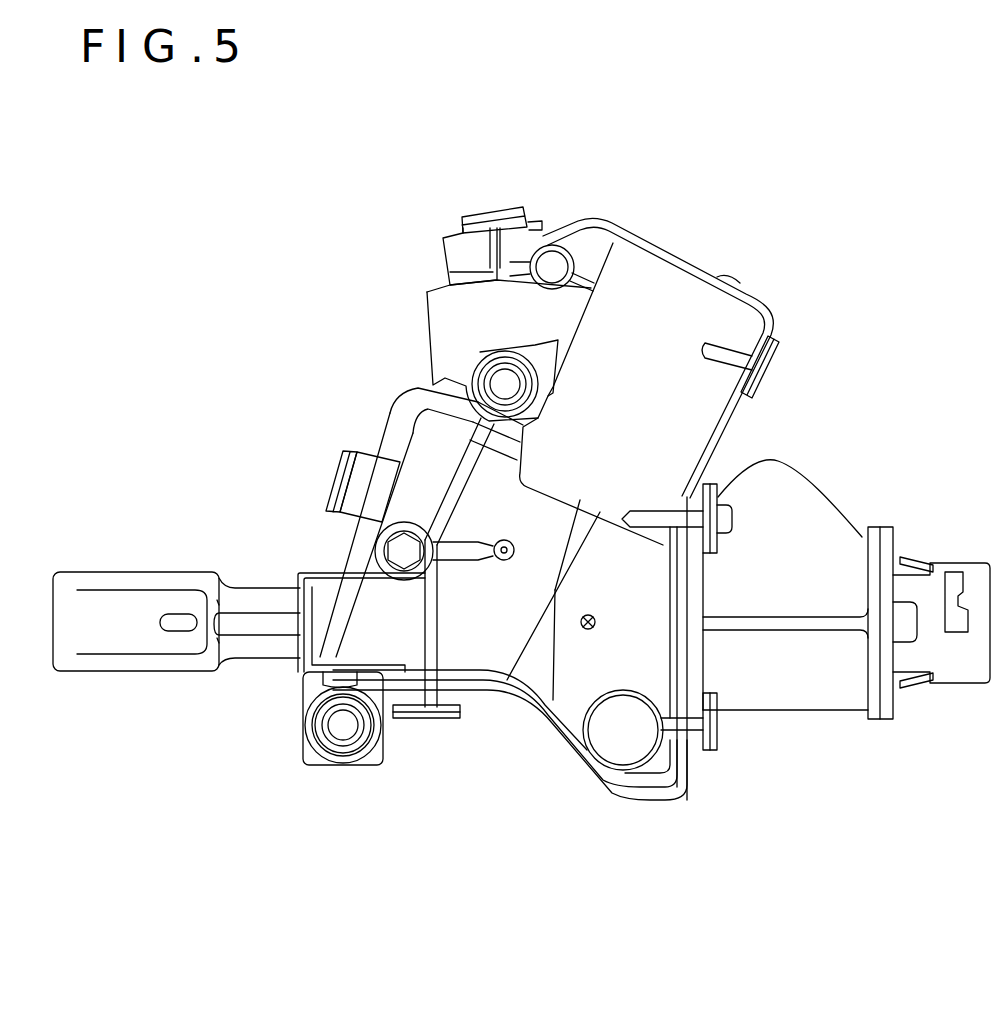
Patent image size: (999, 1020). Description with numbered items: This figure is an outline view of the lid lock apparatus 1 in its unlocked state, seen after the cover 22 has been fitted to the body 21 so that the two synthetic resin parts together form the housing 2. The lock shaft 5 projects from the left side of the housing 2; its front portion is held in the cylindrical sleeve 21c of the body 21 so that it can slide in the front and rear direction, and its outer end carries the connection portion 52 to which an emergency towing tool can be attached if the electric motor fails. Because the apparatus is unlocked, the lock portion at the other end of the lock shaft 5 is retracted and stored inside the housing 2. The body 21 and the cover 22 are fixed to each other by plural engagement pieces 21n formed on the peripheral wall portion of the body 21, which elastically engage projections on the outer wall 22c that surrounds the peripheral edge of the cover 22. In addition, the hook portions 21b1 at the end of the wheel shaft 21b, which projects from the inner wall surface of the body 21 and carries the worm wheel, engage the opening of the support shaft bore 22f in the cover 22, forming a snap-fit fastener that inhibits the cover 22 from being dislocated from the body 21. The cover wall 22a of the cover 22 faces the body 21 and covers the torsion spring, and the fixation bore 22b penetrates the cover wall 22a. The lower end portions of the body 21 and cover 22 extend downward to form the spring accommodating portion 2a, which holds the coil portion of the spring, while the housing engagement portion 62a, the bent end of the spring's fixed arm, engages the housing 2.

The lid lock apparatus 1 is at (333, 183).
The actuator housing 2 is at (602, 512).
The spring accommodating portion 2a is at (573, 723).
The lock shaft 5 is at (108, 572).
The connection portion 52 is at (105, 673).
The body 21 is at (837, 540).
The wheel shaft 21b is at (395, 478).
The hook portions 21b1 is at (383, 556).
The cylindrical sleeve 21c is at (833, 700).
The engagement pieces 21n is at (470, 207).
The cover 22 is at (672, 287).
The cover wall 22a is at (565, 703).
The fixation bore 22b is at (476, 725).
The outer wall 22c is at (640, 800).
The support shaft bore 22f is at (398, 463).
The housing engagement portion 62a is at (597, 633).